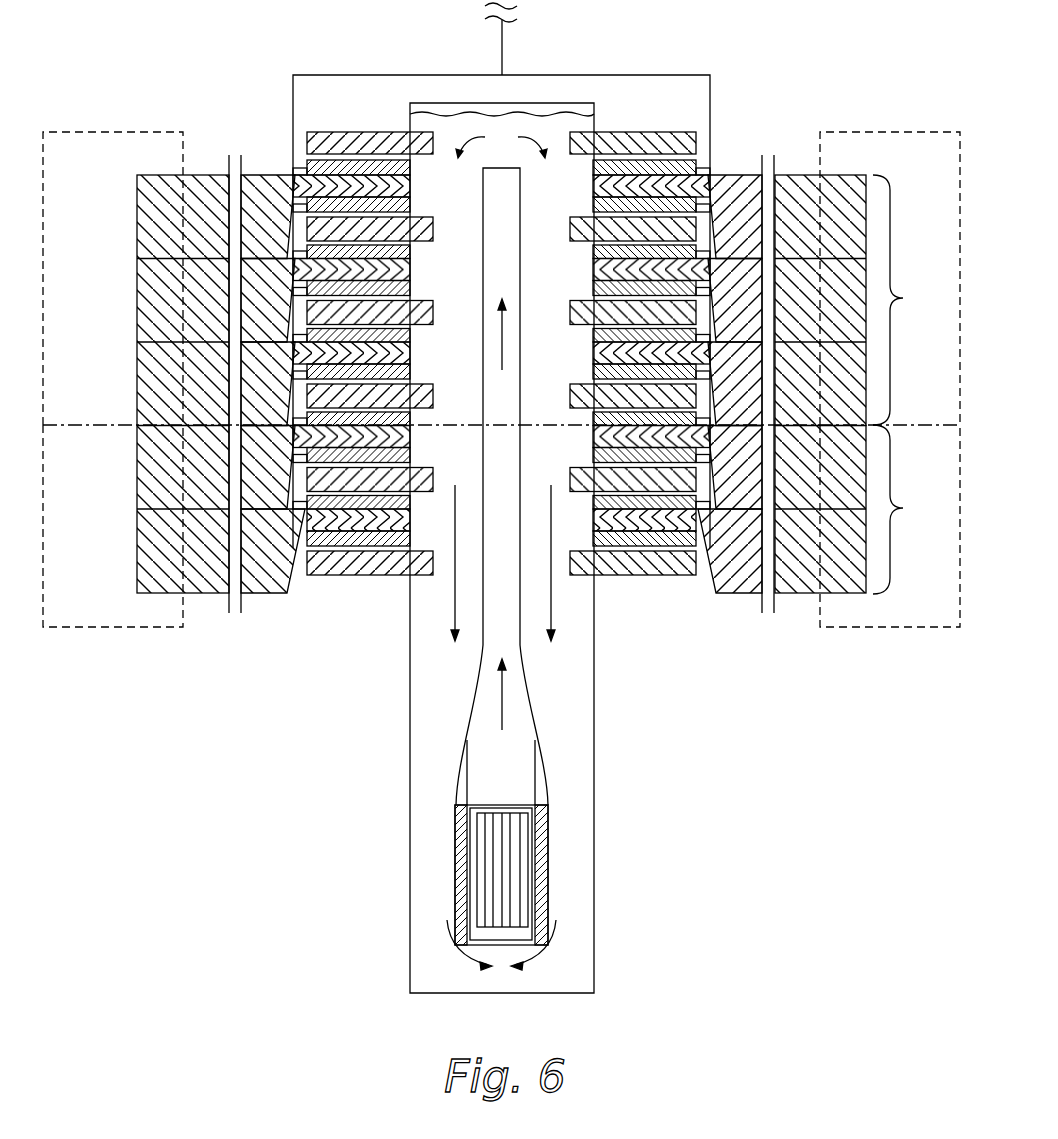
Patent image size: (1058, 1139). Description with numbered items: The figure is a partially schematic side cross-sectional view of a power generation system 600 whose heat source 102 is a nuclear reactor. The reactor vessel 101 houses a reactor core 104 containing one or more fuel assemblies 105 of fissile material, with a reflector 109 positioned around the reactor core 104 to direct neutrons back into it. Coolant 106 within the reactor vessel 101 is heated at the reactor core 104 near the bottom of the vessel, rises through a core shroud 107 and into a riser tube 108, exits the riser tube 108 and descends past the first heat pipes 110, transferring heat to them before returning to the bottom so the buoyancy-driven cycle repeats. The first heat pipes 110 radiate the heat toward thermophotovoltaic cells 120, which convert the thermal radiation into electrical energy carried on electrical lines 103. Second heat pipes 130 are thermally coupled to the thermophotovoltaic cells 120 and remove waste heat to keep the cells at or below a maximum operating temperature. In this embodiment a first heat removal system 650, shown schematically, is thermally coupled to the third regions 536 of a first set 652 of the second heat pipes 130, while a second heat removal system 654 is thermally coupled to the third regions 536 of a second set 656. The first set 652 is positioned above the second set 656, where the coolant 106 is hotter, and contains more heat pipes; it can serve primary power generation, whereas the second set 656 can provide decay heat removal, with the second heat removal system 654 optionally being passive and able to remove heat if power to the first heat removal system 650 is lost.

The power generation system 600 is at (246, 81).
The electrical lines 103 is at (307, 75).
The thermophotovoltaic cells 120 is at (385, 165).
The coolant 106 is at (548, 113).
The first heat pipes 110 is at (665, 215).
The second heat pipes 130 is at (722, 345).
The first heat removal system 650 is at (110, 130).
The third regions 536 is at (150, 375).
The first set 652 is at (862, 300).
The second set 656 is at (862, 509).
The second heat removal system 654 is at (120, 630).
The heat source 102 is at (614, 684).
The reactor vessel 101 is at (594, 762).
The riser tube 108 is at (483, 645).
The core shroud 107 is at (460, 770).
The reactor core 104 is at (457, 805).
The fuel assemblies 105 is at (515, 870).
The reflector 109 is at (457, 892).